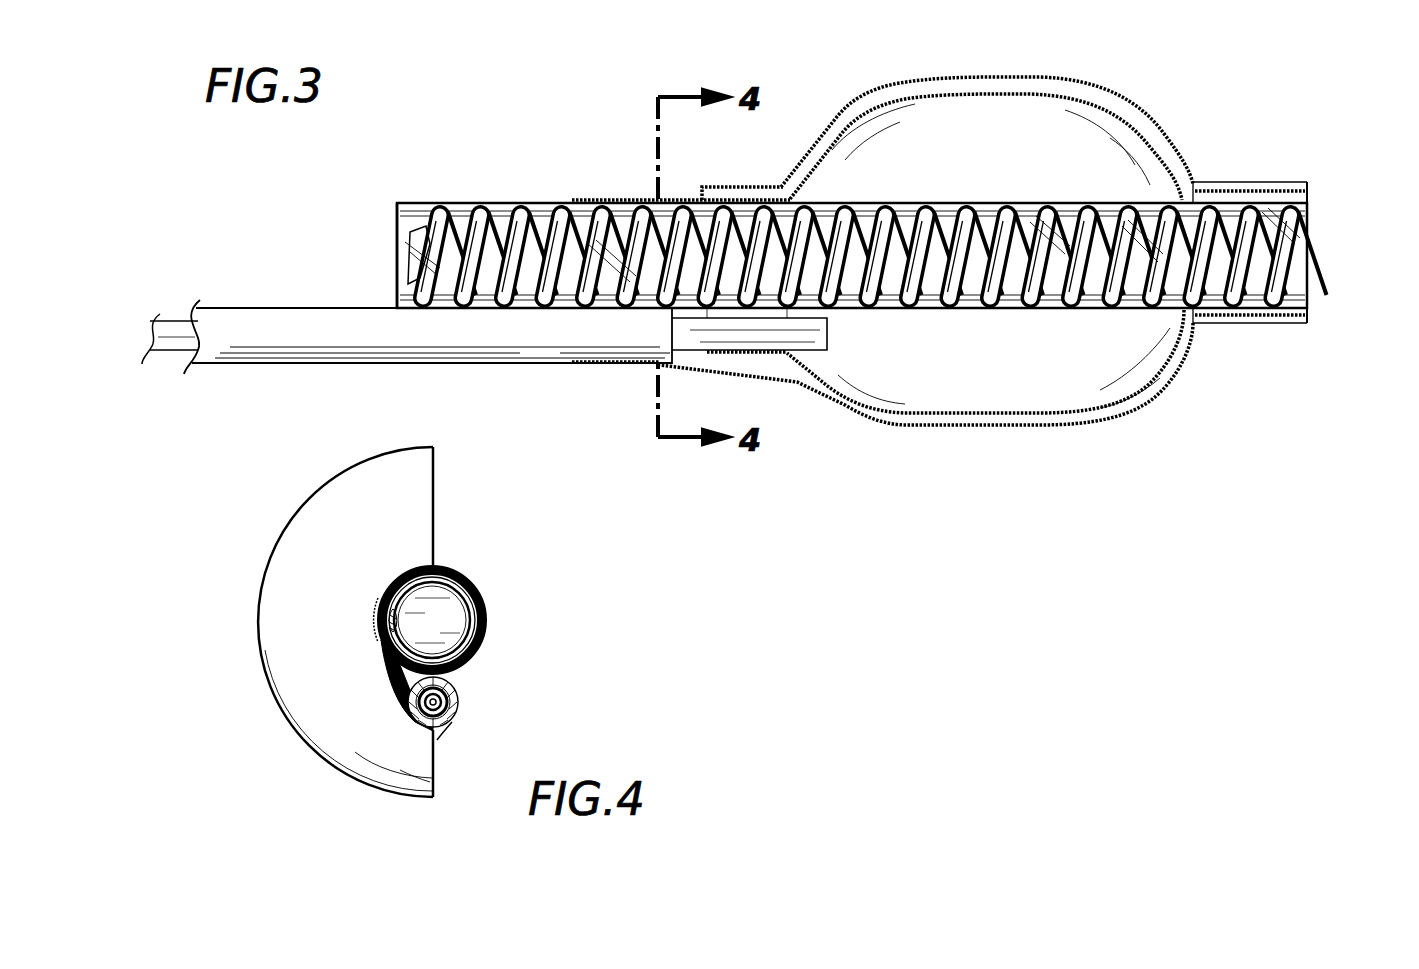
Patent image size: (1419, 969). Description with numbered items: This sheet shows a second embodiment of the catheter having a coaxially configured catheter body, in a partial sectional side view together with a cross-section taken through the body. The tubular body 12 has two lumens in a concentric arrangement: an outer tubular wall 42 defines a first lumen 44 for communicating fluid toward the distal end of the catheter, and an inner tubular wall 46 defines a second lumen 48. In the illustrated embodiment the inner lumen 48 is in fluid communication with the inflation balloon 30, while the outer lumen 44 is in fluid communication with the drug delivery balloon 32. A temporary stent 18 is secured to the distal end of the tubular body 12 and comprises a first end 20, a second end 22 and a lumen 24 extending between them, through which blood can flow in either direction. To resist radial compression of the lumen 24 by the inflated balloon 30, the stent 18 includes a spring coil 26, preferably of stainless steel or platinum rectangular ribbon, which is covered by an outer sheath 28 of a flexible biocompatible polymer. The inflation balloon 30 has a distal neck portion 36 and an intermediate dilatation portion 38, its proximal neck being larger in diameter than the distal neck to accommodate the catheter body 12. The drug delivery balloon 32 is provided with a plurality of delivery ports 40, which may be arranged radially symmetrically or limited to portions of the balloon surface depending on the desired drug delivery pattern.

In FIG. 3, the tubular body 12 is at (374, 332).
In FIG. 3, the temporary stent 18 is at (862, 225).
In FIG. 4, the temporary stent 18 is at (466, 588).
In FIG. 3, the first end 20 is at (384, 248).
In FIG. 3, the second end 22 is at (1318, 251).
In FIG. 4, the lumen 24 is at (452, 618).
In FIG. 3, the spring coil 26 is at (441, 206).
In FIG. 4, the spring coil 26 is at (474, 638).
In FIG. 3, the outer sheath 28 is at (896, 204).
In FIG. 4, the outer sheath 28 is at (470, 584).
In FIG. 3, the inflation balloon 30 is at (1108, 404).
In FIG. 3, the drug delivery balloon 32 is at (836, 410).
In FIG. 4, the drug delivery balloon 32 is at (330, 502).
In FIG. 3, the distal neck portion 36 is at (1302, 193).
In FIG. 3, the intermediate dilatation portion 38 is at (958, 106).
In FIG. 3, the delivery ports 40 is at (943, 428).
In FIG. 4, the outer tubular wall 42 is at (460, 690).
In FIG. 4, the first lumen 44 is at (459, 703).
In FIG. 3, the inner tubular wall 46 is at (180, 352).
In FIG. 4, the inner tubular wall 46 is at (455, 714).
In FIG. 3, the second lumen 48 is at (840, 330).
In FIG. 4, the second lumen 48 is at (443, 714).